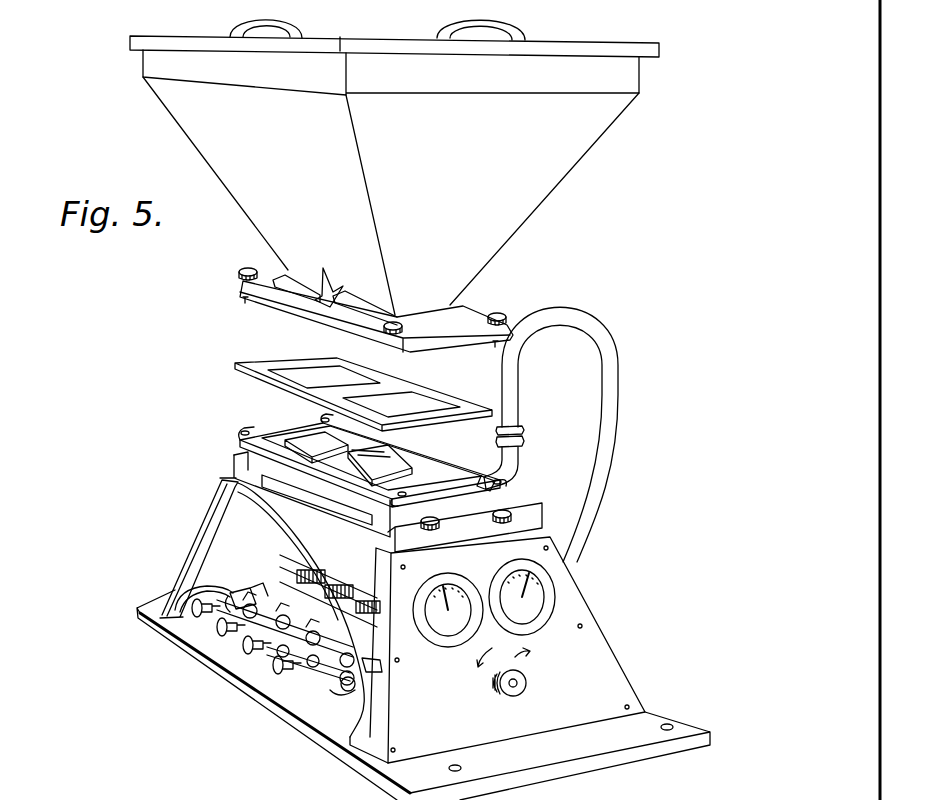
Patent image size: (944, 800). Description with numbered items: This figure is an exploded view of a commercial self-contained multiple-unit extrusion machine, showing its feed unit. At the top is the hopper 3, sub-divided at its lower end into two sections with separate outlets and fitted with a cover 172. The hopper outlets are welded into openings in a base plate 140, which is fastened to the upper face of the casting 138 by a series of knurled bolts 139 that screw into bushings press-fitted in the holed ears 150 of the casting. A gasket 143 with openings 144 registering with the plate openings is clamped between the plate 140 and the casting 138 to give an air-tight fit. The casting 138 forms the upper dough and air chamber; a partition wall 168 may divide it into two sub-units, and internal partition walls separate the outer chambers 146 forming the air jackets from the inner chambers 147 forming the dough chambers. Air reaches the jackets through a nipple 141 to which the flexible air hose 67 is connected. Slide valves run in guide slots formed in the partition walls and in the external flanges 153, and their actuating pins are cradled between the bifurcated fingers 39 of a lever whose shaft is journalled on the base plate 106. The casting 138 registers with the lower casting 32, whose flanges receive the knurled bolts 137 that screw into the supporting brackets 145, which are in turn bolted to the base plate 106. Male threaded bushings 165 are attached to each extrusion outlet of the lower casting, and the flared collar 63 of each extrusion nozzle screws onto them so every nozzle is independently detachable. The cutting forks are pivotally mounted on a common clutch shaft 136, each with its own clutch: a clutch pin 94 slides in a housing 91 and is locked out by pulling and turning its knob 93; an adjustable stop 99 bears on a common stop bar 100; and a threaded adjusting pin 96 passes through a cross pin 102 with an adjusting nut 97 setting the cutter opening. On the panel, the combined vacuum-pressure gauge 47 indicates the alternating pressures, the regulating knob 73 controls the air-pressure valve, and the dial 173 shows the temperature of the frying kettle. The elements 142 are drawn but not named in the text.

The hopper 3 is at (573, 152).
The cover 172 is at (553, 46).
The knurled bolts 139 is at (244, 269).
The base plate 140 is at (265, 302).
The gasket 143 is at (237, 366).
The gasket openings 144 is at (318, 374).
The outer chambers 146 is at (273, 432).
The inner chambers 147 is at (406, 462).
The casting 138 is at (268, 467).
The lower casting 32 is at (268, 515).
The partition wall 168 is at (340, 460).
The flexible air hose 67 is at (602, 413).
The tube fitting nuts 142 is at (517, 425).
The nipple 141 is at (513, 459).
The holed ears 150 is at (512, 480).
The knurled bolts 137 is at (541, 509).
The dial 173 is at (535, 600).
The combined vacuum-pressure gauge 47 is at (443, 626).
The regulating knob 73 is at (527, 683).
The base plate 106 is at (653, 708).
The supporting brackets 145 is at (200, 549).
The clutch shaft 136 is at (220, 583).
The female threaded flared collar 63 is at (287, 567).
The male threaded bushings 165 is at (302, 560).
The stop bar 100 is at (253, 577).
The adjusting pin 96 is at (182, 633).
The knob 93 is at (218, 642).
The clutch pin 94 is at (245, 652).
The housing 91 is at (270, 667).
The cross pin 102 is at (318, 672).
The adjusting nut 97 is at (350, 685).
The adjustable stop 99 is at (378, 672).
The bifurcated fingers 39 is at (228, 794).
The external flanges 153 is at (289, 794).